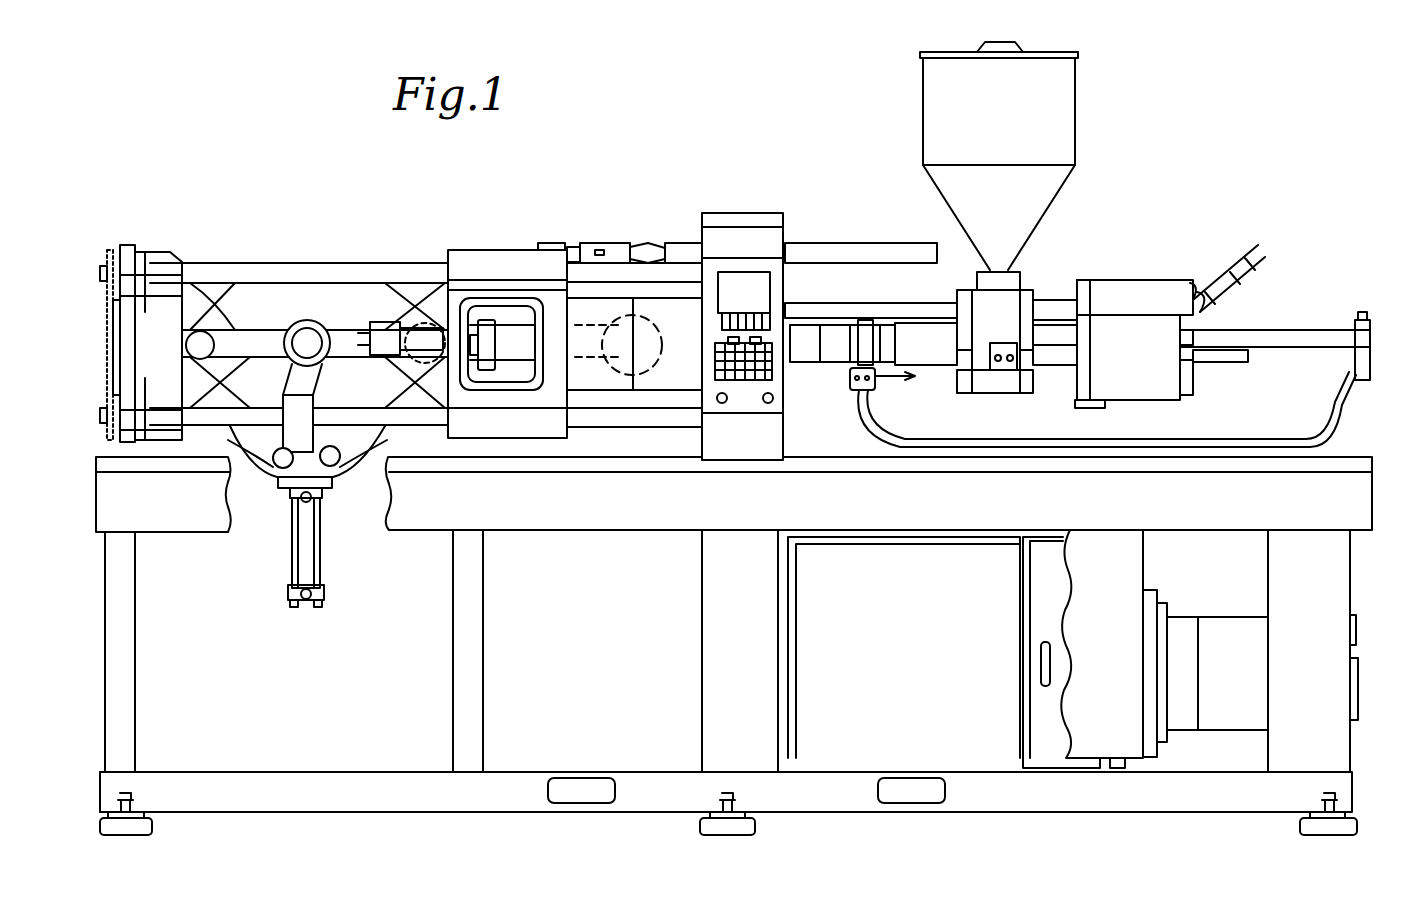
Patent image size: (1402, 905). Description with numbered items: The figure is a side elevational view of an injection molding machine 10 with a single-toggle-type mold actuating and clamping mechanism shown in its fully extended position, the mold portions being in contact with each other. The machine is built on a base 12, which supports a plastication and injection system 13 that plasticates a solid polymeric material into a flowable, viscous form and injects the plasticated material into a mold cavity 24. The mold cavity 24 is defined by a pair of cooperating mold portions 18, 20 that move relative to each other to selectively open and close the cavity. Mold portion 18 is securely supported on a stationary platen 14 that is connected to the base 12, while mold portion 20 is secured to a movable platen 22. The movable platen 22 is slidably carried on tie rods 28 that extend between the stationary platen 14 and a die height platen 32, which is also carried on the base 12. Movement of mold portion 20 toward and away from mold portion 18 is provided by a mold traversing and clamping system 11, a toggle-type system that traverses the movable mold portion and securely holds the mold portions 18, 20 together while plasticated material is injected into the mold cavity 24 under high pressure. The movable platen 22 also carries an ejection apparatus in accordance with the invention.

The injection molding machine 10 is at (664, 116).
The mold traversing and clamping system 11 is at (278, 161).
The base 12 is at (1334, 510).
The plastication and injection system 13 is at (1167, 216).
The stationary platen 14 is at (733, 234).
The mold portion 18 is at (680, 380).
The mold portion 20 is at (607, 380).
The movable platen 22 is at (487, 255).
The mold cavity 24 is at (612, 320).
The tie rods 28 is at (305, 268).
The die height platen 32 is at (159, 253).